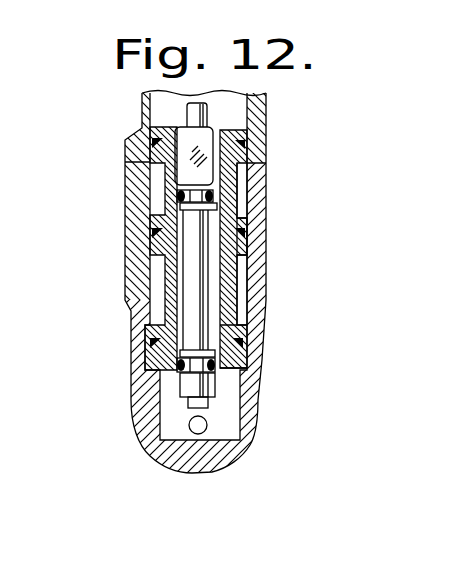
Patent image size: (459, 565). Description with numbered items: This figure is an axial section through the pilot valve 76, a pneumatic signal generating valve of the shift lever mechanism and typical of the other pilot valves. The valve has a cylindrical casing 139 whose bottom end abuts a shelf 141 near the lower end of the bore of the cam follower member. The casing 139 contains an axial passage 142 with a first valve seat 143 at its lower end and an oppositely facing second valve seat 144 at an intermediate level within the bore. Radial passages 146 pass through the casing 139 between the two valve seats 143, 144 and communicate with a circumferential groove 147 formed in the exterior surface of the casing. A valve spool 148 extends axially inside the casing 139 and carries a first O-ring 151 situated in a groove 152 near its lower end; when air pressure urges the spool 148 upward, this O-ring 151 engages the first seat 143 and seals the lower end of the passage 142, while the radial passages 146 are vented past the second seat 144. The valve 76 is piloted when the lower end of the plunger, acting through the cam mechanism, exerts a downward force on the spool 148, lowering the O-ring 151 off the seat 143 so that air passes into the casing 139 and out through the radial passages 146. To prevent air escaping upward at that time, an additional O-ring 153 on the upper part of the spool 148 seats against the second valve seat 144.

The pilot valve 76 is at (277, 121).
The cylindrical casing 139 is at (228, 204).
The shelf 141 is at (238, 357).
The axial passage 142 is at (214, 257).
The first valve seat 143 is at (176, 366).
The second valve seat 144 is at (216, 198).
The radial passages 146 is at (242, 300).
The circumferential groove 147 is at (163, 315).
The valve spool 148 is at (192, 255).
The first O-ring 151 is at (223, 380).
The groove 152 is at (185, 395).
The additional O-ring 153 is at (176, 191).